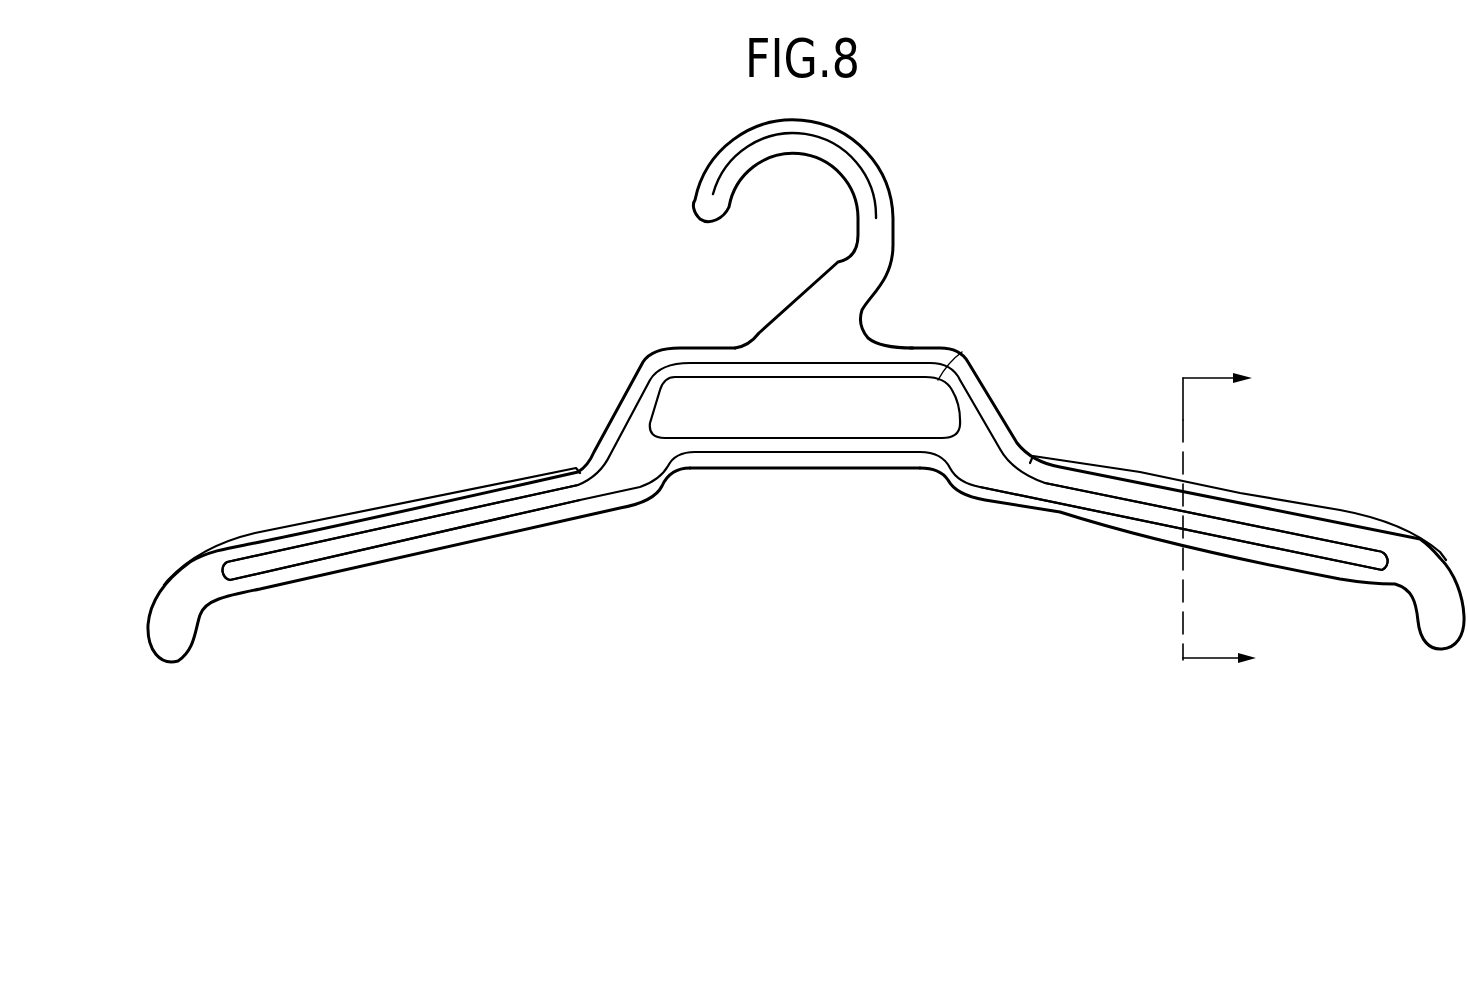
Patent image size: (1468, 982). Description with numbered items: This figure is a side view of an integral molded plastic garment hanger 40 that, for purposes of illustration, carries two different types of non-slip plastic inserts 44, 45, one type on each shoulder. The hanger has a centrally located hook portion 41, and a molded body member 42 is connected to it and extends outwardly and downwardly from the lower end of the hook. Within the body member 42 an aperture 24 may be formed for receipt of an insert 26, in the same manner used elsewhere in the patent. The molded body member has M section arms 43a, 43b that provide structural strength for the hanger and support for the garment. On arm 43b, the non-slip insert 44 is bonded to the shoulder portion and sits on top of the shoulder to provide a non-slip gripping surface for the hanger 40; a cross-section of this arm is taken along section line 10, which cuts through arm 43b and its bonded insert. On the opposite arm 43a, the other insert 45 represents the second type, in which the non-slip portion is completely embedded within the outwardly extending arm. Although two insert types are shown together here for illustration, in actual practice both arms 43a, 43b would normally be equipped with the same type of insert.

The garment hanger 40 is at (552, 342).
The hook portion 41 is at (893, 205).
The molded body member 42 is at (847, 468).
The insert 26 is at (707, 422).
The aperture 24 is at (928, 399).
The non-slip plastic insert 45 is at (403, 503).
The non-slip insert 44 is at (1356, 480).
The M section arm 43a is at (467, 543).
The M section arm 43b is at (1158, 537).
The section line 10 is at (1243, 520).